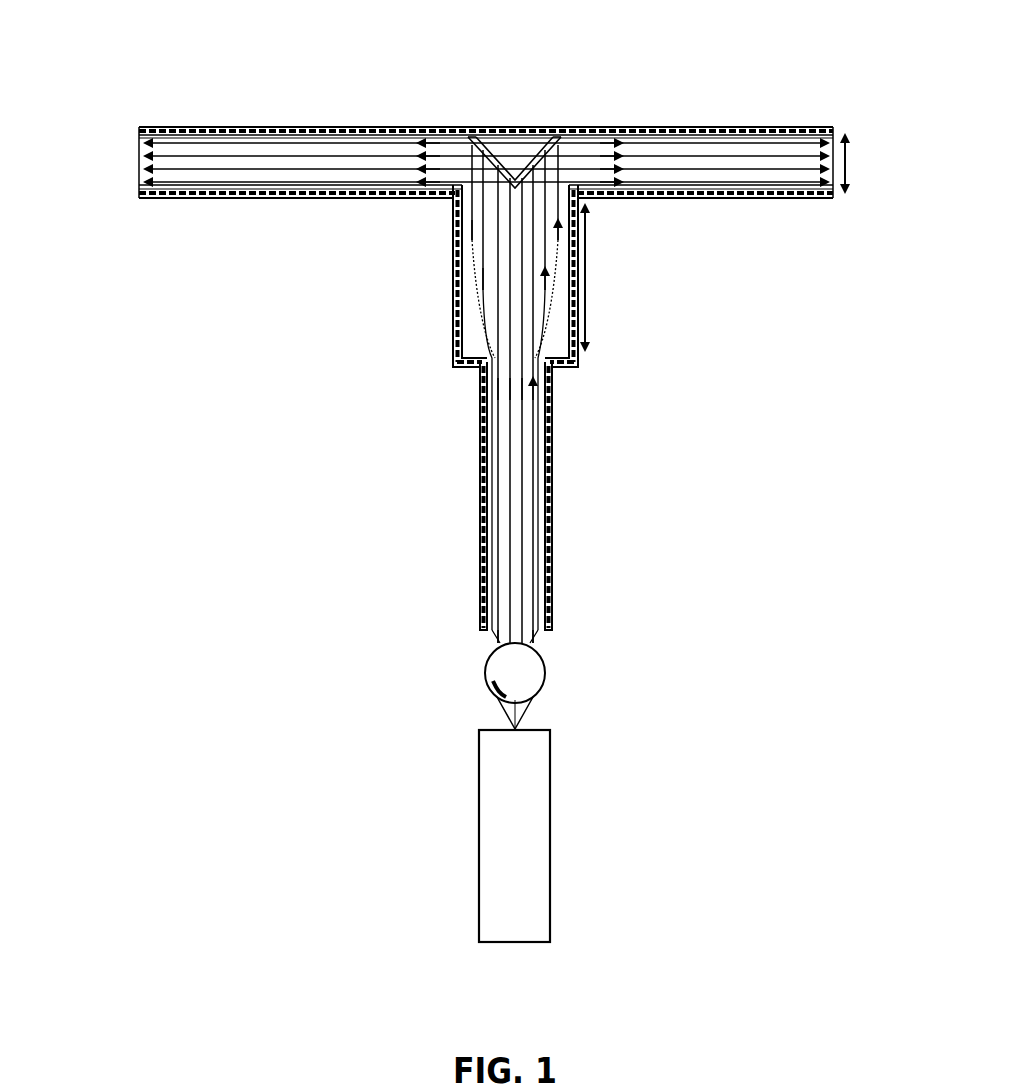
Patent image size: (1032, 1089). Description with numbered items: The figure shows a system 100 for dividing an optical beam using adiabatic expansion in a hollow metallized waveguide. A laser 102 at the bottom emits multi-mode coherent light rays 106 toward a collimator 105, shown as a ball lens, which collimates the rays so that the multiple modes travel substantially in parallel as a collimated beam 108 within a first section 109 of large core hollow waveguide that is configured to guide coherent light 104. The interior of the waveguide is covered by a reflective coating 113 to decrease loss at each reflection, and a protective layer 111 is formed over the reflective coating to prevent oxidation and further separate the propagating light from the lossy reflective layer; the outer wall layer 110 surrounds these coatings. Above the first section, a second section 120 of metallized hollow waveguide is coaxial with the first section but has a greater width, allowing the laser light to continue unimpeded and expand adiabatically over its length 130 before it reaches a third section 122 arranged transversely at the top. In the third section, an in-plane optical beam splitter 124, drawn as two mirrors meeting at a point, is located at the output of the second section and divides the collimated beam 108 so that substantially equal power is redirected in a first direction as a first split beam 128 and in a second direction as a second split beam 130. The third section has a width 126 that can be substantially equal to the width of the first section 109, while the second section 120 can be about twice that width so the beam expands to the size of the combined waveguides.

The system for dividing an optical beam 100 is at (157, 98).
The laser 102 is at (550, 835).
The coherent light 104 is at (538, 638).
The collimator 105 is at (485, 680).
The multi-mode coherent light rays 106 is at (527, 718).
The collimated beam 108 is at (530, 500).
The first section of large core hollow waveguide 109 is at (465, 603).
The outer cladding layer 110 is at (325, 127).
The protective layer 111 is at (192, 127).
The reflective coating 113 is at (259, 127).
The second section of metallized hollow waveguide 120 is at (445, 290).
The third section 122 is at (644, 124).
The in-plane optical beam splitter 124 is at (530, 138).
The width of the third section 126 is at (847, 165).
The first split beam 128 is at (300, 143).
The second split beam 130 is at (716, 143).